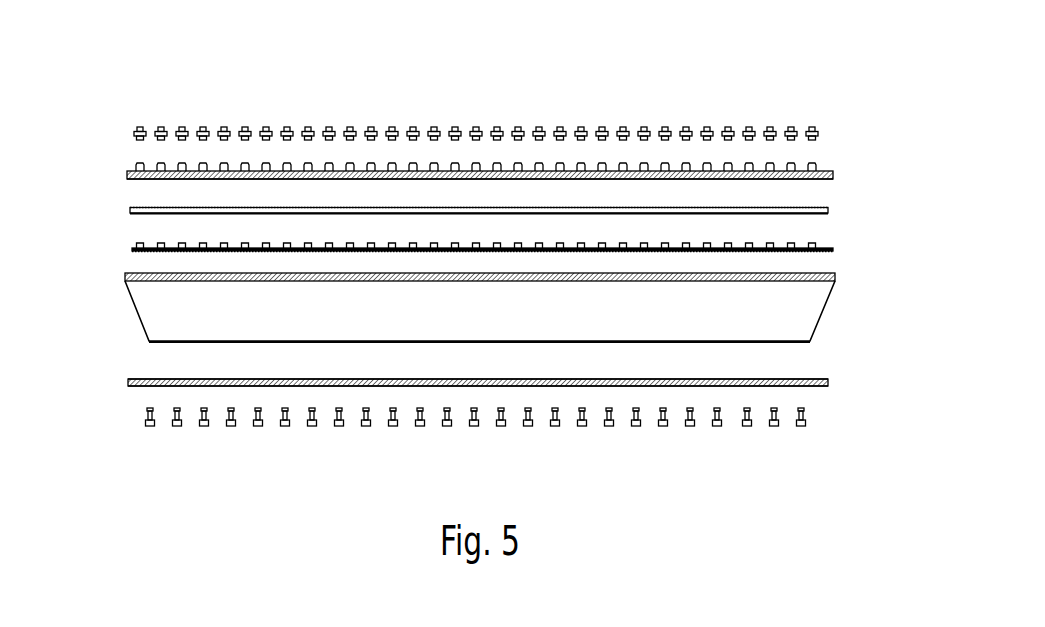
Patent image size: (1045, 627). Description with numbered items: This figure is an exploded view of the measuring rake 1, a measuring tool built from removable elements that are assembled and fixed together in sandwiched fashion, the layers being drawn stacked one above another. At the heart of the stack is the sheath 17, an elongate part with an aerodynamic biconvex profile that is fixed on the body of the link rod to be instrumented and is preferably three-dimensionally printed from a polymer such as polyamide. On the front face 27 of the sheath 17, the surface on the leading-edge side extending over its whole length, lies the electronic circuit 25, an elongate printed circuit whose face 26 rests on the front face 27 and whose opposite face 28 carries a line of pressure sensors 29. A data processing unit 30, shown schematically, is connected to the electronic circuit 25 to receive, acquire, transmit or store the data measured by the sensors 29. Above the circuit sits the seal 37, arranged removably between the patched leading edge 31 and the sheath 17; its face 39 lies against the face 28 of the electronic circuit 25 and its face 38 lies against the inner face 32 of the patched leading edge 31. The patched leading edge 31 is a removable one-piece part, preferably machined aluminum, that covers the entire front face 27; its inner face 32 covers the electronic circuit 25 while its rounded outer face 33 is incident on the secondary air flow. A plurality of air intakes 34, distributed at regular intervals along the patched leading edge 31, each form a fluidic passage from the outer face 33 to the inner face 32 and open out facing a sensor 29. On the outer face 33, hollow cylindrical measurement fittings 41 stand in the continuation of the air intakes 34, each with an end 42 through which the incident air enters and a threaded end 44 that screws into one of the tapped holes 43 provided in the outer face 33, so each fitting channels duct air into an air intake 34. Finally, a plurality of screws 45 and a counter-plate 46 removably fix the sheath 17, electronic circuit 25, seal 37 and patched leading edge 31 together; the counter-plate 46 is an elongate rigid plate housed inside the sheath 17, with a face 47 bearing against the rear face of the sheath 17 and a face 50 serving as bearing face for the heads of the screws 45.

The measuring rake 1 is at (878, 92).
The sheath 17 is at (139, 320).
The electronic circuit 25 is at (834, 250).
The face 26 is at (806, 254).
The front face 27 is at (132, 250).
The face 28 is at (803, 236).
The pressure sensors 29 is at (623, 242).
The data processing unit 30 is at (155, 269).
The patched leading edge 31 is at (834, 174).
The inner face 32 is at (806, 183).
The outer face 33 is at (804, 161).
The air intakes 34 is at (127, 172).
The seal 37 is at (130, 211).
The face 38 is at (155, 199).
The face 39 is at (155, 219).
The measurement fittings 41 is at (773, 126).
The end 42 is at (134, 115).
The tapped holes 43 is at (134, 158).
The threaded end 44 is at (136, 152).
The screws 45 is at (748, 428).
The counter-plate 46 is at (829, 382).
The face 47 is at (809, 371).
The face 50 is at (809, 392).